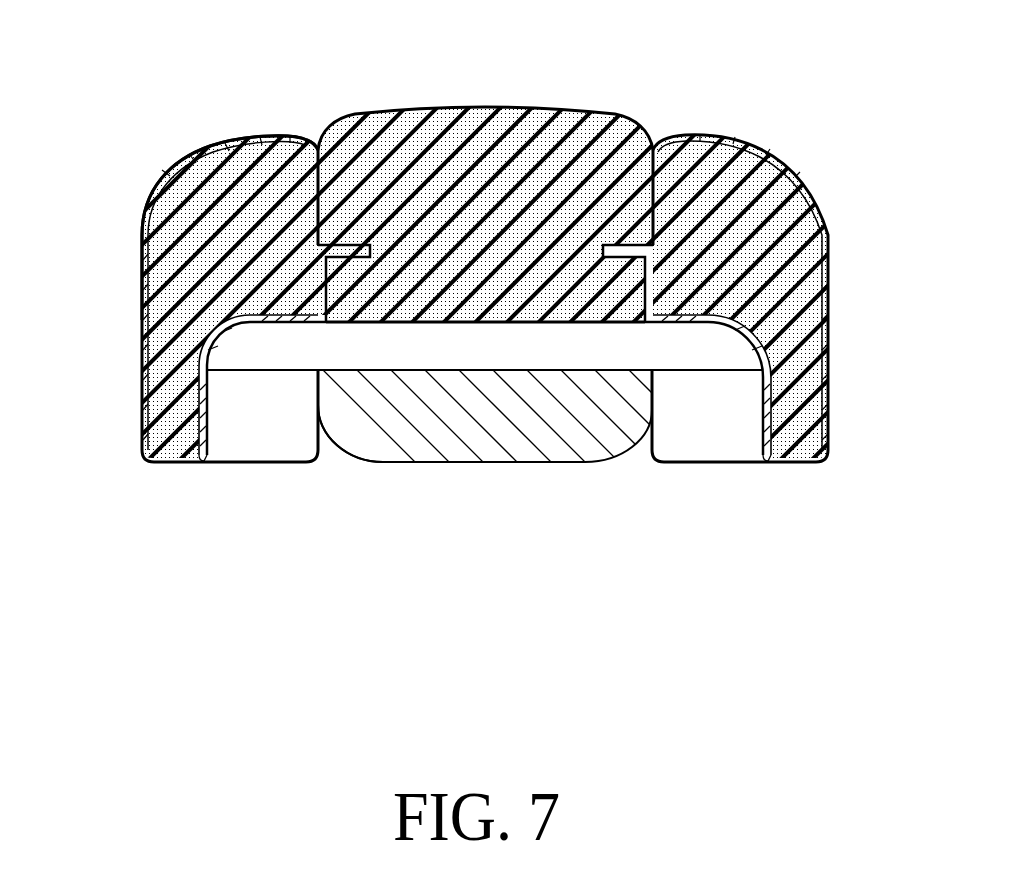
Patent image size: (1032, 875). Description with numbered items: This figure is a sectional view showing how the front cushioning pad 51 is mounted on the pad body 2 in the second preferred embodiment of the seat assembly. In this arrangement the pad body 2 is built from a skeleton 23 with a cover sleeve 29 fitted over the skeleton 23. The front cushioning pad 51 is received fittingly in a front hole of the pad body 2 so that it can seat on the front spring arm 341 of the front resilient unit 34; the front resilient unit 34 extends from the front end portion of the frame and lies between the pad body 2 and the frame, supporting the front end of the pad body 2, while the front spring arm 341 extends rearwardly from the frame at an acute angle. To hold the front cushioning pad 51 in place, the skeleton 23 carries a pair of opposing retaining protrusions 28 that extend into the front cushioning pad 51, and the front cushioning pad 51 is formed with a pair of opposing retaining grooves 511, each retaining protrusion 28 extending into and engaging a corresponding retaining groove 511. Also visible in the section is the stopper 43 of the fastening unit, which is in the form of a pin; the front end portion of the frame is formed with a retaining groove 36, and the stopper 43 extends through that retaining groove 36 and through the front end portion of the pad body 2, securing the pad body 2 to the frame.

The pad body 2 is at (756, 128).
The cover sleeve 29 is at (222, 190).
The front cushioning pad 51 is at (458, 135).
The retaining protrusions 28 is at (346, 253).
The retaining grooves 511 is at (322, 284).
The skeleton 23 is at (203, 400).
The stopper 43 is at (697, 345).
The front resilient unit 34 is at (503, 465).
The front spring arm 341 is at (413, 452).
The retaining groove 36 is at (343, 372).